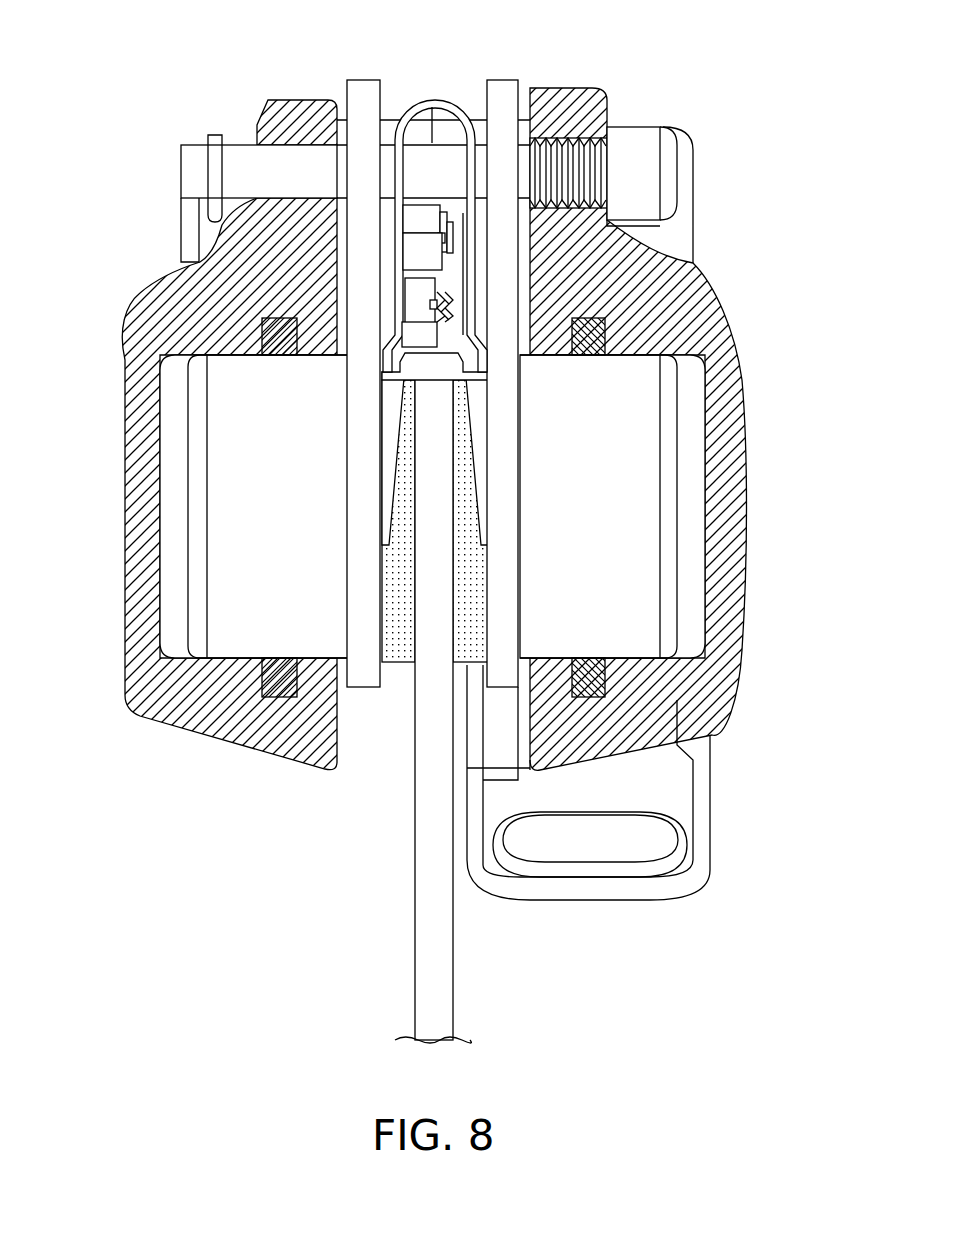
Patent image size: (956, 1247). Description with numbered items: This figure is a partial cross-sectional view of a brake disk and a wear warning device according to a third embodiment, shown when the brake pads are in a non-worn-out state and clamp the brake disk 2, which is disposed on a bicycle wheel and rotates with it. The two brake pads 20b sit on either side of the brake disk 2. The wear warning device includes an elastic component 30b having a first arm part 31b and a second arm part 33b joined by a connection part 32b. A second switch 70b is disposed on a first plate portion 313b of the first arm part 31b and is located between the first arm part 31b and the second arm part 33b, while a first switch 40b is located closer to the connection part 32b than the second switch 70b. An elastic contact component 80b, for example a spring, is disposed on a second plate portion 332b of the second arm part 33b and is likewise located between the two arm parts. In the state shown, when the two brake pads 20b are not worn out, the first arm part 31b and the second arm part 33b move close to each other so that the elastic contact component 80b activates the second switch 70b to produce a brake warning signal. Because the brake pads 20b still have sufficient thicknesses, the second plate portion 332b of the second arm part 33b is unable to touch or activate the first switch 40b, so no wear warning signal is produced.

The elastic component 30b is at (436, 189).
The first arm part 31b is at (385, 217).
The connection part 32b is at (440, 110).
The second arm part 33b is at (478, 215).
The first switch 40b is at (423, 222).
The first plate portion 313b is at (423, 263).
The second switch 70b is at (420, 291).
The elastic contact component 80b is at (453, 316).
The second plate portion 332b is at (462, 268).
The brake pads 20b is at (398, 650).
The brake disk 2 is at (432, 965).